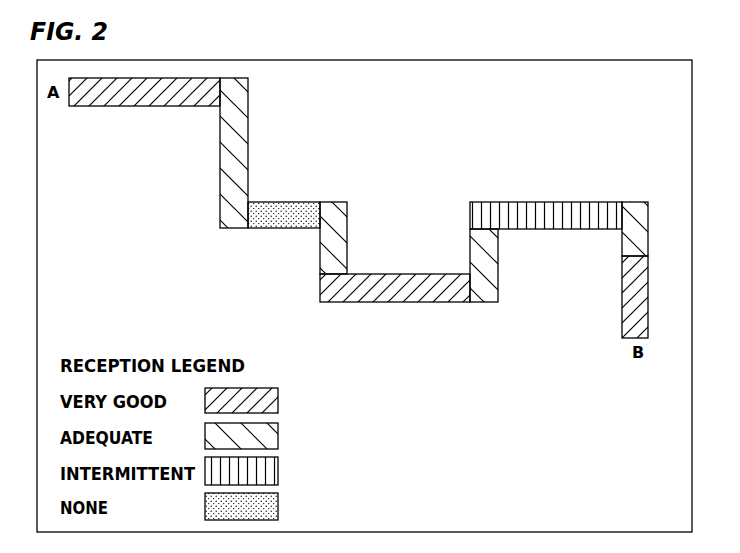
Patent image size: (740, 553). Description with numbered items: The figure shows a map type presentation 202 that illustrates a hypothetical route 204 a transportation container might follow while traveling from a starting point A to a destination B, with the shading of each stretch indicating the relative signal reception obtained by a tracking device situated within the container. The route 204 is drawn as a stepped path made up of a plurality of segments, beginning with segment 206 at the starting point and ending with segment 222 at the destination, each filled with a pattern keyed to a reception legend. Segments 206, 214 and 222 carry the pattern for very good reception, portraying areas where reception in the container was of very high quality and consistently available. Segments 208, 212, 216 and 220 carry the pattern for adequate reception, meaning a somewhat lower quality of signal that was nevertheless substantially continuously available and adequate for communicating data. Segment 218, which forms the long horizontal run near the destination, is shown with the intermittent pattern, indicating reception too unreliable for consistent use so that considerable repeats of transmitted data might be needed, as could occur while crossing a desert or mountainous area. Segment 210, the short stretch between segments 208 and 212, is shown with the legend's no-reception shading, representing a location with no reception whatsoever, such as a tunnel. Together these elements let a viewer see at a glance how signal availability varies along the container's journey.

The map type presentation 202 is at (200, 60).
The route 204 is at (318, 115).
The route segment 206 is at (187, 99).
The route segment 208 is at (245, 110).
The route segment 210 is at (298, 228).
The route segment 212 is at (347, 237).
The route segment 214 is at (423, 297).
The route segment 216 is at (491, 278).
The route segment 218 is at (538, 207).
The route segment 220 is at (645, 225).
The route segment 222 is at (622, 303).